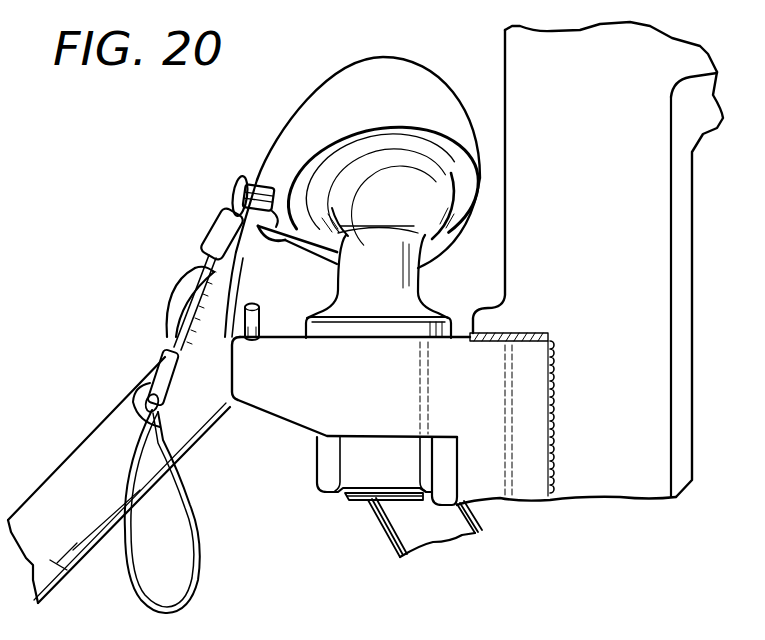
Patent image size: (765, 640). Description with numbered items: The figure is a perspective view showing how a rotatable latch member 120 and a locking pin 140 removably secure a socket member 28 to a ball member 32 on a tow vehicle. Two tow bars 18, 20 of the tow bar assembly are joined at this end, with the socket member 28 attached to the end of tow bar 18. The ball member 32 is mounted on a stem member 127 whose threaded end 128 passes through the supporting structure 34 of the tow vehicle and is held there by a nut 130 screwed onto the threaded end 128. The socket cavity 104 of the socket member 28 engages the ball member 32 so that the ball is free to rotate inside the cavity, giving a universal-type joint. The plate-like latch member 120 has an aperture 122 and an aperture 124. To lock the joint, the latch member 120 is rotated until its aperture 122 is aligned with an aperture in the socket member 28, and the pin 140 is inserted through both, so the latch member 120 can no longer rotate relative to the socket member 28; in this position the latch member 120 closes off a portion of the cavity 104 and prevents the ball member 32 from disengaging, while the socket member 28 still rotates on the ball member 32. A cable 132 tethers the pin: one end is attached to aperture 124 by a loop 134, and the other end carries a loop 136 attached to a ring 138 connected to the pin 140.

The tow bar 18 is at (46, 601).
The tow bar 20 is at (478, 524).
The socket member 28 is at (360, 70).
The ball member 32 is at (450, 183).
The supporting structure 34 is at (293, 413).
The socket cavity 104 is at (326, 272).
The rotatable latch member 120 is at (341, 199).
The aperture 122 is at (256, 302).
The aperture 124 is at (286, 226).
The stem member 127 is at (395, 297).
The threaded end 128 is at (358, 498).
The nut 130 is at (317, 479).
The cable 132 is at (200, 598).
The loop 134 is at (246, 180).
The loop 136 is at (162, 330).
The ring 138 is at (192, 280).
The pin 140 is at (259, 338).